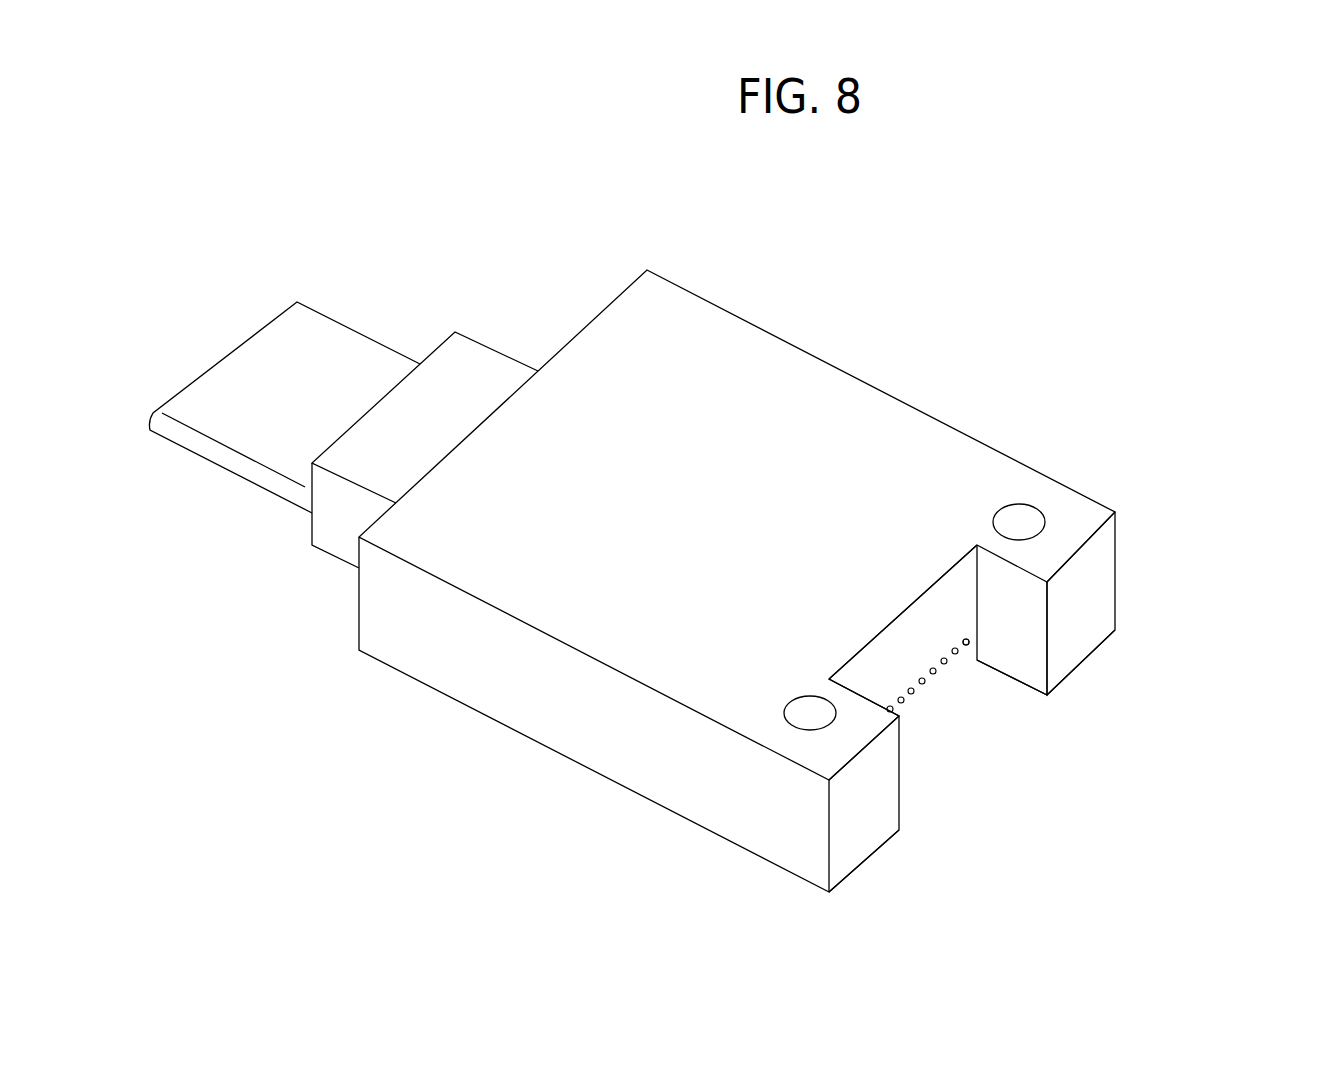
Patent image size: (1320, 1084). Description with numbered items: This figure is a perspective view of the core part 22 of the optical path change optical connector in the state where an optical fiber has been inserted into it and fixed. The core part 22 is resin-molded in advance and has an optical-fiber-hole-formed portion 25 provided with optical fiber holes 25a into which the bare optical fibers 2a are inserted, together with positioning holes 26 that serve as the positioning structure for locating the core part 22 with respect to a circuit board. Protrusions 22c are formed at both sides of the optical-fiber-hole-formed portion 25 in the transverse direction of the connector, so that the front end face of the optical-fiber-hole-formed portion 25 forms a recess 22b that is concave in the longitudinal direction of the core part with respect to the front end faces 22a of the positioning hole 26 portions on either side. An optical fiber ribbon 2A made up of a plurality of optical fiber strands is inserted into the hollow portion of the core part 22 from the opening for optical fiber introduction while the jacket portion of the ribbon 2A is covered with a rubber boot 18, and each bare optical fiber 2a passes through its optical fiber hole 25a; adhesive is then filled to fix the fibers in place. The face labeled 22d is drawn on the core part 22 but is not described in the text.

The optical fiber ribbon 2A is at (345, 358).
The rubber boot 18 is at (483, 365).
The core part 22 is at (720, 340).
The front end face of the core part 22a is at (883, 681).
The recess 22b is at (1097, 603).
The protrusion 22c is at (892, 635).
The top face 22d is at (1085, 518).
The optical-fiber-hole-formed portion 25 is at (937, 626).
The optical fiber hole 25a is at (944, 661).
The optical fiber 2a is at (998, 745).
The positioning hole 26 is at (798, 705).